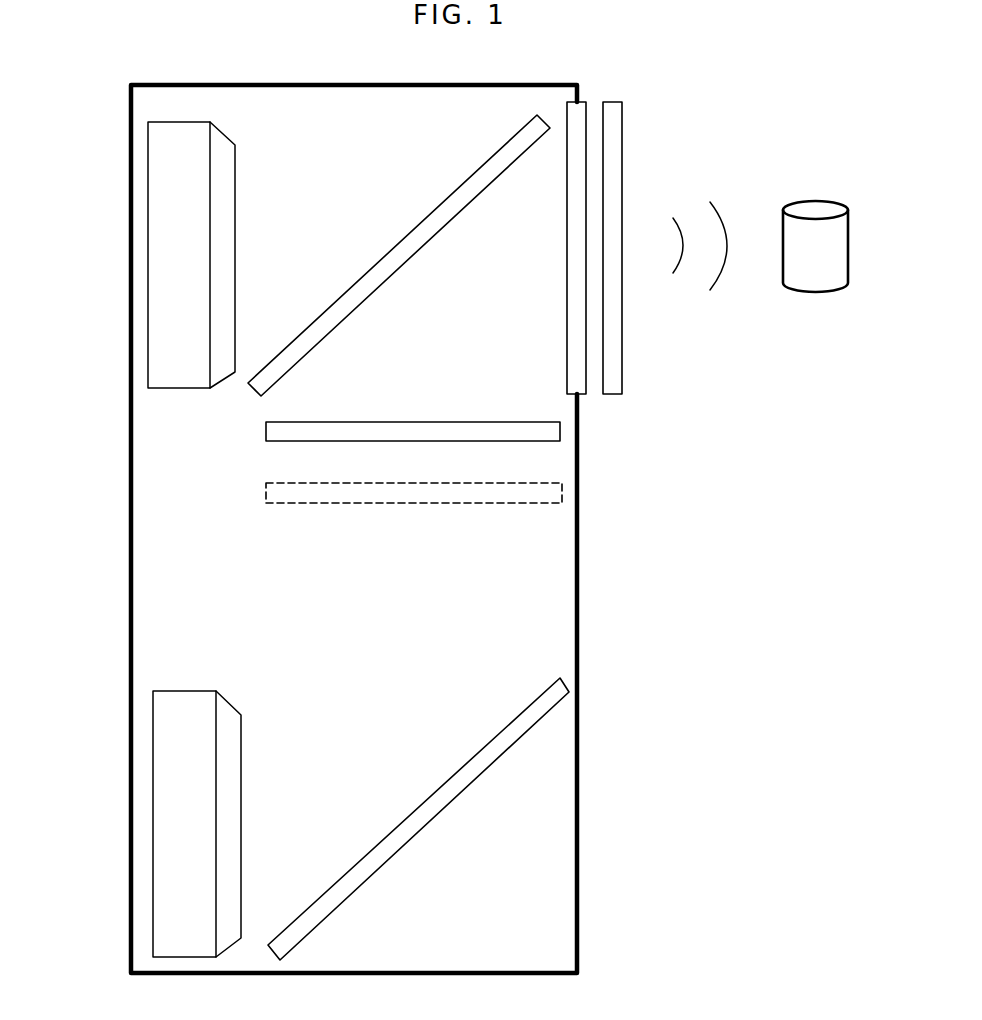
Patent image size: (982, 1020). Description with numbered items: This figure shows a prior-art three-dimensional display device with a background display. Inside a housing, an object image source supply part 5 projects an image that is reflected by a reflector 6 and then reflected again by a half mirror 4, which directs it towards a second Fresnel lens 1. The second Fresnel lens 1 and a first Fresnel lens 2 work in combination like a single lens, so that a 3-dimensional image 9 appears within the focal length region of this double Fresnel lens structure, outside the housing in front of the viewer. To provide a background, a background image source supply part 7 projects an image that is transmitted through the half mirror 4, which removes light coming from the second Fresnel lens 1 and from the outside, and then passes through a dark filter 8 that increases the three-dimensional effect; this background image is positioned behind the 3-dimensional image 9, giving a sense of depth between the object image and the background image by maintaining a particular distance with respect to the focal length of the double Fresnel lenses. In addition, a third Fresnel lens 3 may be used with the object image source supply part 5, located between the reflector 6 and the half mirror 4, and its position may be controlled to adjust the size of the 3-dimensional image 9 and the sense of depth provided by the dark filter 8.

The second Fresnel lens 1 is at (577, 384).
The first Fresnel lens 2 is at (355, 431).
The third Fresnel lens 3 is at (357, 492).
The half mirror 4 is at (413, 233).
The object image source supply part 5 is at (186, 823).
The reflector 6 is at (460, 775).
The background image source supply part 7 is at (176, 176).
The dark filter 8 is at (612, 127).
The 3-dimensional image 9 is at (840, 263).